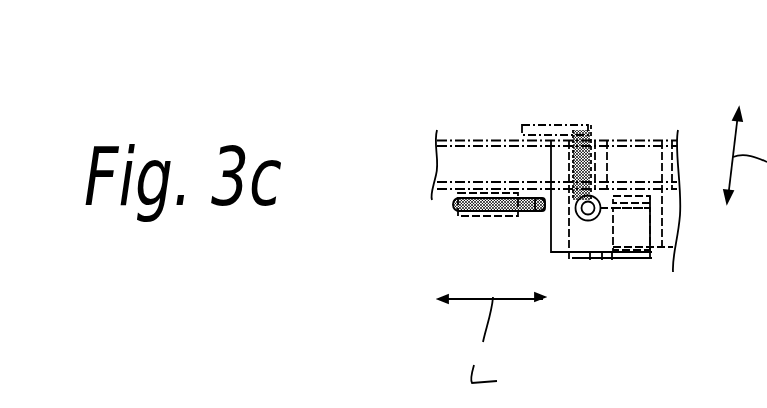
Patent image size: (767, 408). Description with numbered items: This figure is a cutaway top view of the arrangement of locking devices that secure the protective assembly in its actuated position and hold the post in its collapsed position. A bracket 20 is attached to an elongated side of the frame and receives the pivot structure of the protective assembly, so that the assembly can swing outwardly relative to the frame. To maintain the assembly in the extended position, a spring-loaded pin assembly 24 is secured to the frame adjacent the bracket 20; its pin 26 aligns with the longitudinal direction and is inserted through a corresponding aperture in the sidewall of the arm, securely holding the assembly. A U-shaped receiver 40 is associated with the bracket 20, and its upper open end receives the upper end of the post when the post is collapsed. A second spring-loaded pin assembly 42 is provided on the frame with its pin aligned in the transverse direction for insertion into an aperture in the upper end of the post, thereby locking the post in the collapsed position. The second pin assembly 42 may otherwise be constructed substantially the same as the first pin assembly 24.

The bracket 20 is at (590, 312).
The spring-loaded pin assembly 24 is at (407, 298).
The pin 26 is at (543, 207).
The U-shaped receiver 40 is at (662, 308).
The second spring-loaded pin assembly 42 is at (626, 80).